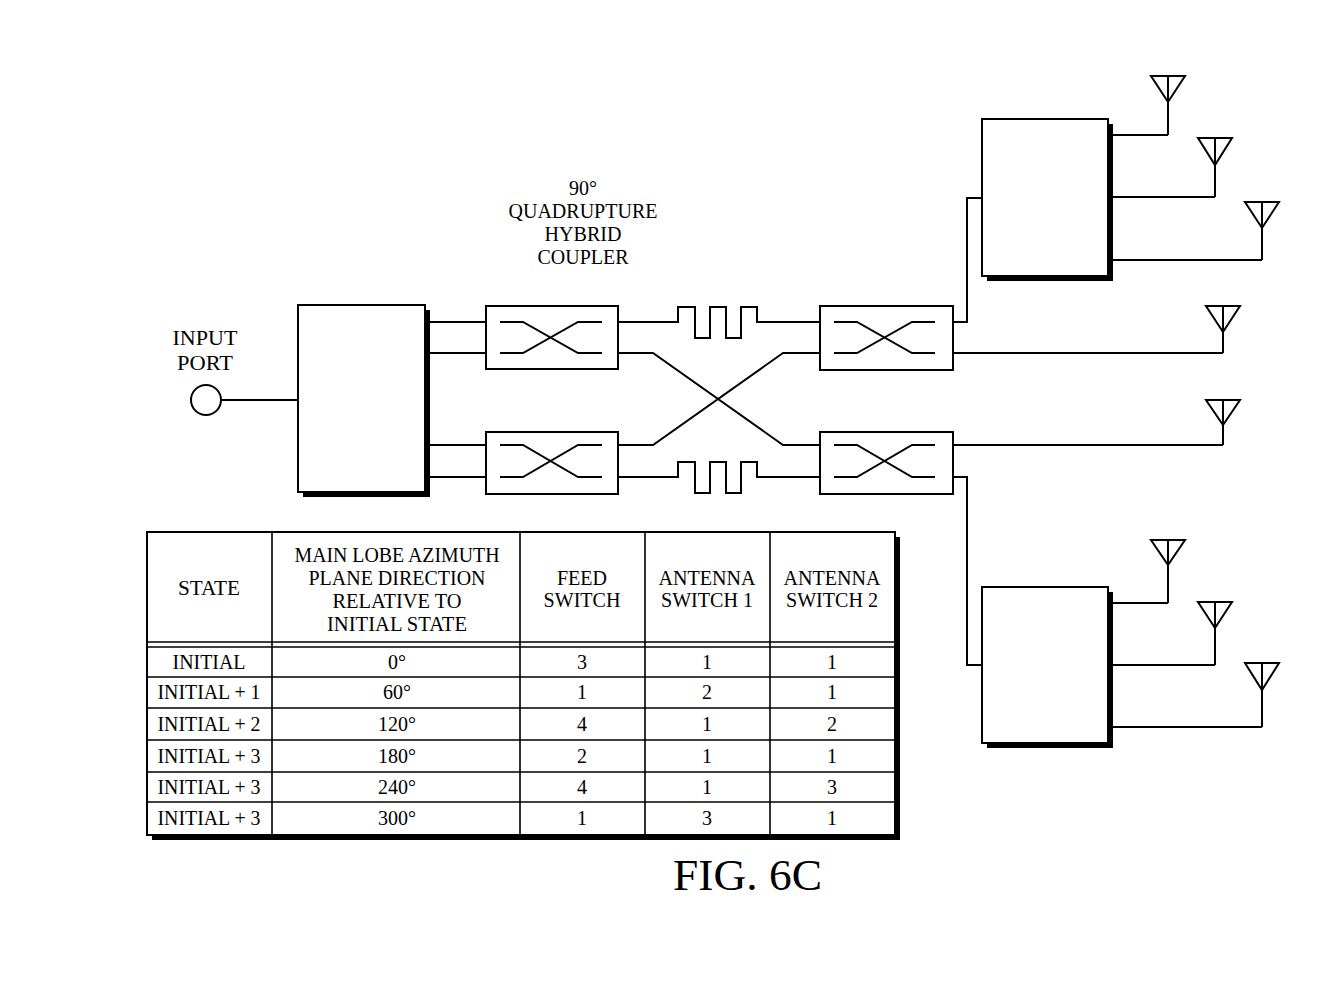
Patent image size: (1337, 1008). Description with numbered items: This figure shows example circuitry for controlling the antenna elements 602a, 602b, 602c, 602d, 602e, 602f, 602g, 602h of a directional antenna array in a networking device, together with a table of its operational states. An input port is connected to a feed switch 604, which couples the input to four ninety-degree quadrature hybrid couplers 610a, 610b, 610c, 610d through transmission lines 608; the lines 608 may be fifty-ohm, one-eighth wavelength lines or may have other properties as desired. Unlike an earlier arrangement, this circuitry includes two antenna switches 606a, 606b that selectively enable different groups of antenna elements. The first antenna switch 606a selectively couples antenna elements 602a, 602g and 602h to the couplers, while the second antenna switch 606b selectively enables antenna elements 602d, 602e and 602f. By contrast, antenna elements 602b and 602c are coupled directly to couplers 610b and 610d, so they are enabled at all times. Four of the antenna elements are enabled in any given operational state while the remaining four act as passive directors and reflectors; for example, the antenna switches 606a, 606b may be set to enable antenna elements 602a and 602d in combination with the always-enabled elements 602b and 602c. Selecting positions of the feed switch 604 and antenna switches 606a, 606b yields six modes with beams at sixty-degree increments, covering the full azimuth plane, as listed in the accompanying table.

The antenna element 602a is at (1172, 75).
The antenna element 602b is at (1226, 399).
The antenna element 602c is at (1226, 305).
The antenna element 602d is at (1172, 539).
The antenna element 602e is at (1218, 601).
The antenna element 602f is at (1265, 662).
The antenna element 602g is at (1218, 137).
The antenna element 602h is at (1265, 201).
The feed switch 604 is at (378, 449).
The antenna switch 606a is at (1023, 248).
The antenna switch 606b is at (1023, 716).
The transmission lines 608 is at (656, 292).
The 90° quadrature hybrid coupler 610a is at (548, 306).
The 90° quadrature hybrid coupler 610b is at (883, 306).
The 90° quadrature hybrid coupler 610c is at (548, 431).
The 90° quadrature hybrid coupler 610d is at (883, 431).